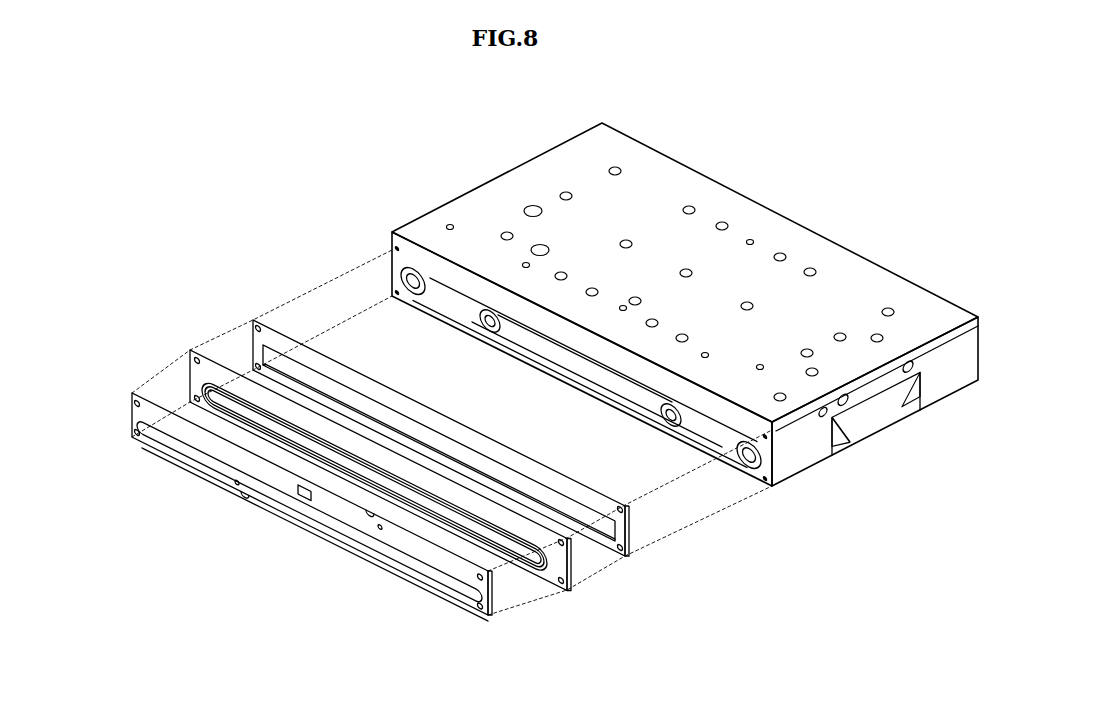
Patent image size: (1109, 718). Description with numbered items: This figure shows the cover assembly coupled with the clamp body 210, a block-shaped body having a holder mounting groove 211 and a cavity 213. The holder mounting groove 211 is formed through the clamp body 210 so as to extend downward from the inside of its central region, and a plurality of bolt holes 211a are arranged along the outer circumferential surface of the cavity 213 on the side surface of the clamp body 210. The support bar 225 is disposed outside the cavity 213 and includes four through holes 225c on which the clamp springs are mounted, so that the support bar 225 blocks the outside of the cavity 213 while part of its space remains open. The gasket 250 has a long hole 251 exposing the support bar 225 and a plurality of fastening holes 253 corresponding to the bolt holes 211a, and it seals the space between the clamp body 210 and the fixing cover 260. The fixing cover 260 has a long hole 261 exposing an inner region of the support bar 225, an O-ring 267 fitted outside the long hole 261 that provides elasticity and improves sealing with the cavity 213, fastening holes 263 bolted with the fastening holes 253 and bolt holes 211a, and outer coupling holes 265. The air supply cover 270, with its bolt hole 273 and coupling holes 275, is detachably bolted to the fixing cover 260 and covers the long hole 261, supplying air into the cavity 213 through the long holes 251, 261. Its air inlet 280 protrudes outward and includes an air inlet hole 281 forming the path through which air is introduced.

The clamp body 210 is at (893, 282).
The bolt hole 211a is at (392, 262).
The holder mounting groove 211 is at (857, 412).
The cavity 213 is at (397, 250).
The support bar 225 is at (647, 407).
The through hole 225c is at (483, 313).
The gasket 250 is at (627, 530).
The long hole 251 is at (256, 345).
The fastening hole 253 is at (253, 320).
The fixing cover 260 is at (570, 575).
The long hole 261 is at (532, 577).
The fastening hole 263 is at (195, 359).
The coupling hole 265 is at (194, 397).
The O-ring 267 is at (512, 570).
The air supply cover 270 is at (473, 587).
The bolt hole 273 is at (245, 492).
The coupling hole 275 is at (136, 405).
The air inlet 280 is at (312, 515).
The air inlet hole 281 is at (300, 492).